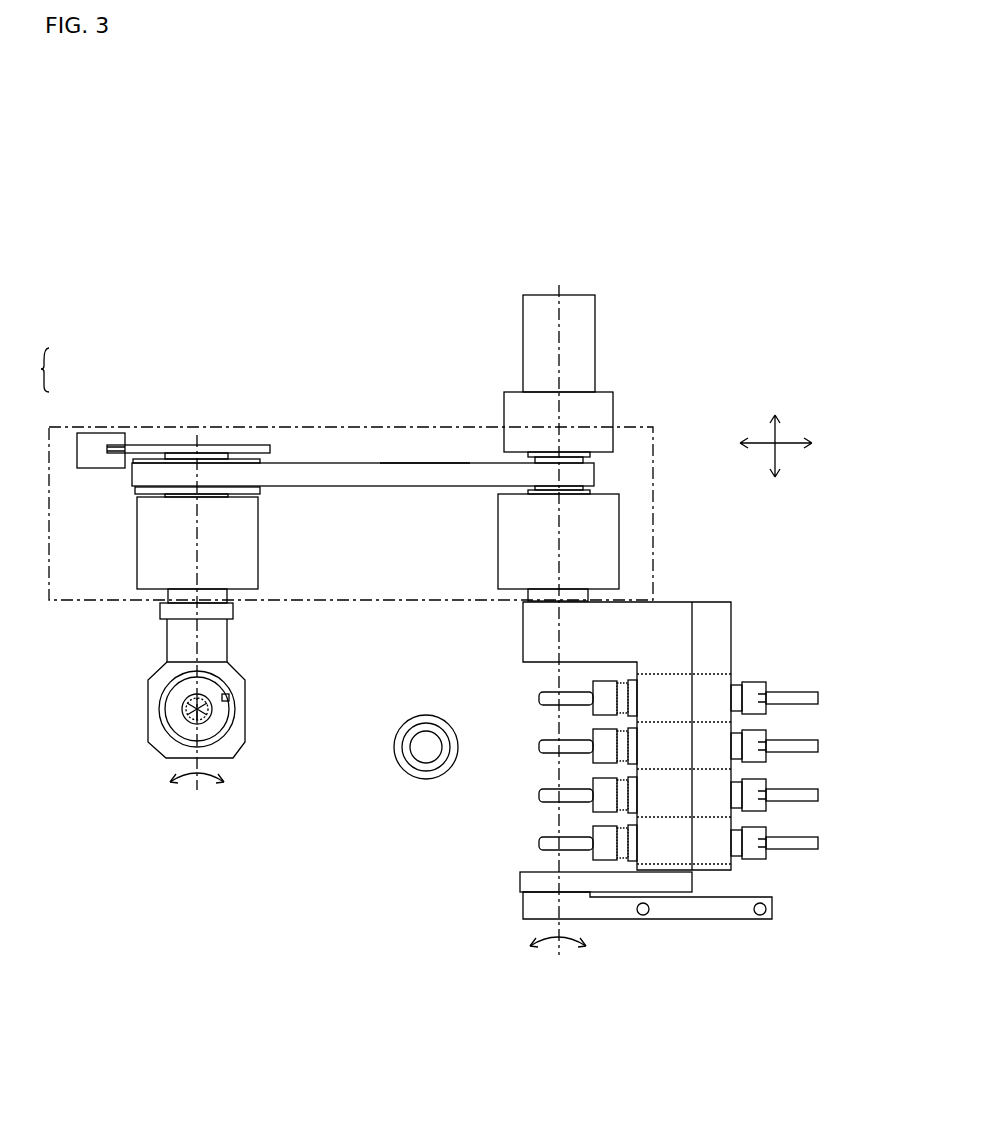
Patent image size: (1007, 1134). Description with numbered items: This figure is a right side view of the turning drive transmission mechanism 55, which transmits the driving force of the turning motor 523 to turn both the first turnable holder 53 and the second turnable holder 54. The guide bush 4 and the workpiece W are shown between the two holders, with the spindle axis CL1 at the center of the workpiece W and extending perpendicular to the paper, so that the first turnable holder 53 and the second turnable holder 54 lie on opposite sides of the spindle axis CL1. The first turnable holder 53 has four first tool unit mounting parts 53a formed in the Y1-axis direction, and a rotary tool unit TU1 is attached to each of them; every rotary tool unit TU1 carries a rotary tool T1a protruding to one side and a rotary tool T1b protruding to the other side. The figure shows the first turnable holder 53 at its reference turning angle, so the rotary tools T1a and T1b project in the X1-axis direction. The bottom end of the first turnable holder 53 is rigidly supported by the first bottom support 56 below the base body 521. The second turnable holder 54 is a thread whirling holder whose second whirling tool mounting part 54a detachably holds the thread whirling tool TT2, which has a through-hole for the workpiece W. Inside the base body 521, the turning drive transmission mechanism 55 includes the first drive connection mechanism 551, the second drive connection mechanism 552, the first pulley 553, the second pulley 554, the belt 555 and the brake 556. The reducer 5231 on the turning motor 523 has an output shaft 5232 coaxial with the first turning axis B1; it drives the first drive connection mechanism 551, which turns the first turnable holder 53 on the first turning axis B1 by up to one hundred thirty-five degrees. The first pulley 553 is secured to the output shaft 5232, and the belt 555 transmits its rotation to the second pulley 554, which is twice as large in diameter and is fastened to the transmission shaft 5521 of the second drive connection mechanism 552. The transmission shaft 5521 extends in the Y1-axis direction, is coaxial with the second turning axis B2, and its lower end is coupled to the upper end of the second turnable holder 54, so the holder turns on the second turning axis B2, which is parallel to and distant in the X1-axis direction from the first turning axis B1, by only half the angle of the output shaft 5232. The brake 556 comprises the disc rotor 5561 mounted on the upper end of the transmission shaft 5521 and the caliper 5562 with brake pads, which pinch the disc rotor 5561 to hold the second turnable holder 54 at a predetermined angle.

The guide bush 4 is at (425, 715).
The workpiece W is at (412, 760).
The spindle axis CL1 is at (426, 747).
The first turnable holder 53 is at (725, 602).
The first tool unit mounting part 53a is at (731, 680).
The rotary tool unit TU1 is at (767, 690).
The rotary tool T1a is at (539, 698).
The rotary tool T1b is at (818, 698).
The first turning axis B1 is at (558, 676).
The second turning axis B2 is at (200, 636).
The second turnable holder 54 is at (168, 650).
The second whirling tool mounting part 54a is at (229, 701).
The thread whirling tool TT2 is at (165, 712).
The turning drive transmission mechanism 55 is at (622, 467).
The first drive connection mechanism 551 is at (613, 512).
The second drive connection mechanism 552 is at (137, 540).
The transmission shaft 5521 is at (137, 492).
The first pulley 553 is at (578, 452).
The second pulley 554 is at (242, 459).
The belt 555 is at (380, 463).
The brake 556 is at (30, 370).
The disc rotor 5561 is at (163, 446).
The caliper 5562 is at (100, 433).
The base body 521 is at (300, 427).
The turning motor 523 is at (545, 296).
The reducer 5231 is at (504, 400).
The output shaft 5232 is at (586, 493).
The first bottom support 56 is at (523, 905).
The X1-axis direction X1 is at (790, 445).
The Y1-axis direction Y1 is at (772, 435).